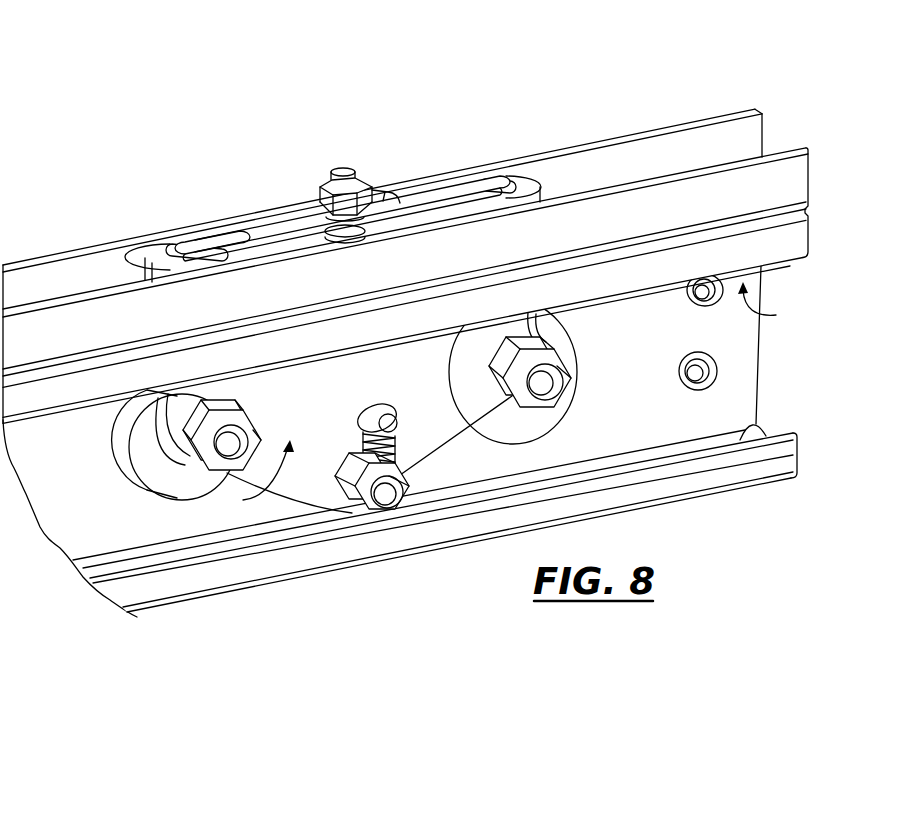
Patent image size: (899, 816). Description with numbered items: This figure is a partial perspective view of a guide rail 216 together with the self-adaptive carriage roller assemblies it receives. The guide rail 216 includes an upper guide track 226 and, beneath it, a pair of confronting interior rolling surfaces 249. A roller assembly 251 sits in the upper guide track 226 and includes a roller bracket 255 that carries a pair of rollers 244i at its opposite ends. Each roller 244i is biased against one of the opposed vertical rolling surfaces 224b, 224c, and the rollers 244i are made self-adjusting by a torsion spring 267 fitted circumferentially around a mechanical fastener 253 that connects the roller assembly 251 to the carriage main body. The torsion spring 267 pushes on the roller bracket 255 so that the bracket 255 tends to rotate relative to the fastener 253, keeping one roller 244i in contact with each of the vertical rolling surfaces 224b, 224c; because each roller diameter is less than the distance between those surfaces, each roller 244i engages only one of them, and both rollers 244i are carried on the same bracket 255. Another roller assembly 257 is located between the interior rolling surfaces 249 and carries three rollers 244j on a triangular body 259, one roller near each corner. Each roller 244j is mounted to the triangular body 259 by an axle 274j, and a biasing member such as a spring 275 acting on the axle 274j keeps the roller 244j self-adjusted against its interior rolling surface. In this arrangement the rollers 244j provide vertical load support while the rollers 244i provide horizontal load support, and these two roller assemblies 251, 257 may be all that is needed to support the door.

The guide rail 216 is at (753, 343).
The vertical rolling surface 224b is at (790, 147).
The vertical rolling surface 224c is at (655, 147).
The upper guide track 226 is at (790, 132).
The rollers 244i is at (147, 270).
The rollers 244j is at (146, 460).
The interior rolling surfaces 249 is at (752, 423).
The roller assembly 251 is at (435, 190).
The mechanical fastener 253 is at (320, 197).
The roller bracket 255 is at (231, 233).
The roller assembly 257 is at (246, 481).
The triangular body 259 is at (423, 427).
The torsion spring 267 is at (384, 189).
The axle 274j is at (550, 388).
The spring 275 is at (394, 446).